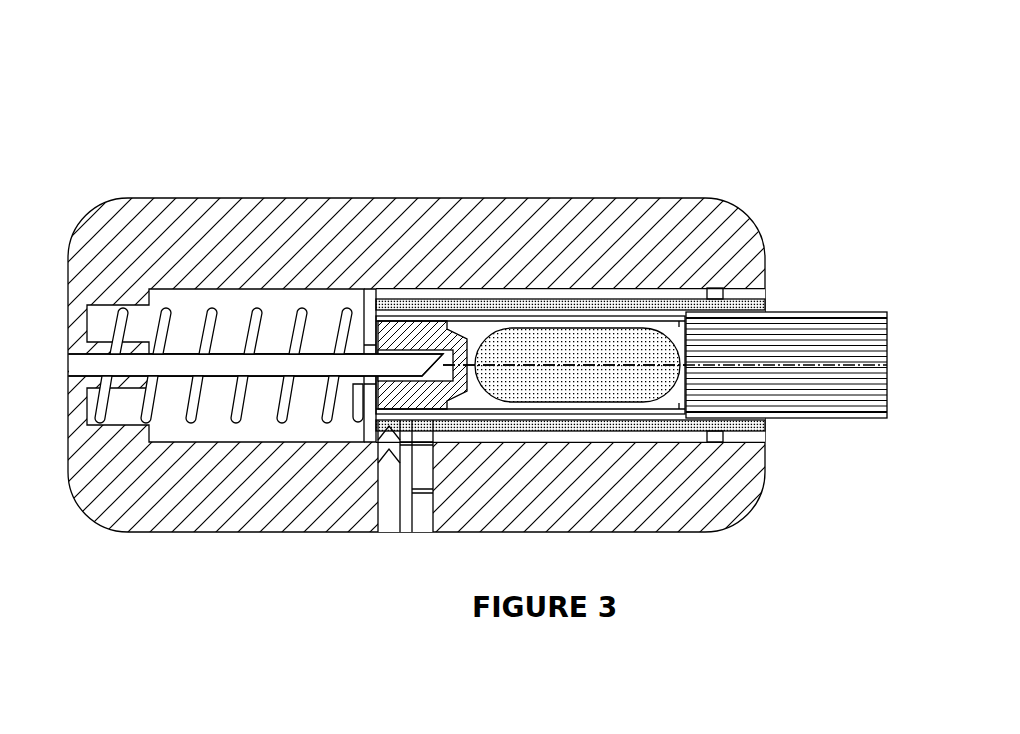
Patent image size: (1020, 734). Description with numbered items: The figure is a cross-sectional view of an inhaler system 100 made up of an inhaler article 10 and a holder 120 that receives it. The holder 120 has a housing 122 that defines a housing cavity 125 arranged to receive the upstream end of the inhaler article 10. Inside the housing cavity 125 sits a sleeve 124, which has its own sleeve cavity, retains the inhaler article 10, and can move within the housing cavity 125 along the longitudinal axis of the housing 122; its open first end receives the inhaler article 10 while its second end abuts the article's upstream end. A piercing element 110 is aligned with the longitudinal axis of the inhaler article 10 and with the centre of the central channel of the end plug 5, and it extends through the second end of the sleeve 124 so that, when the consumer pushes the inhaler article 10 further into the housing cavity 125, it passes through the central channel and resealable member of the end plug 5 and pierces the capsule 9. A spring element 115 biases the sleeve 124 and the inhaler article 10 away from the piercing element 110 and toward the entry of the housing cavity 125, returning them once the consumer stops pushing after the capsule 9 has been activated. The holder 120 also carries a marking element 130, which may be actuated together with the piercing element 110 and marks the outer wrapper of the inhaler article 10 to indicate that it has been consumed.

The inhaler system 100 is at (477, 343).
The holder 120 is at (248, 222).
The housing 122 is at (421, 253).
The housing cavity 125 is at (537, 307).
The sleeve 124 is at (628, 307).
The piercing element 110 is at (183, 363).
The spring element 115 is at (277, 405).
The marking element 130 is at (392, 475).
The inhaler article 10 is at (817, 427).
The end plug 5 is at (428, 348).
The capsule 9 is at (589, 358).